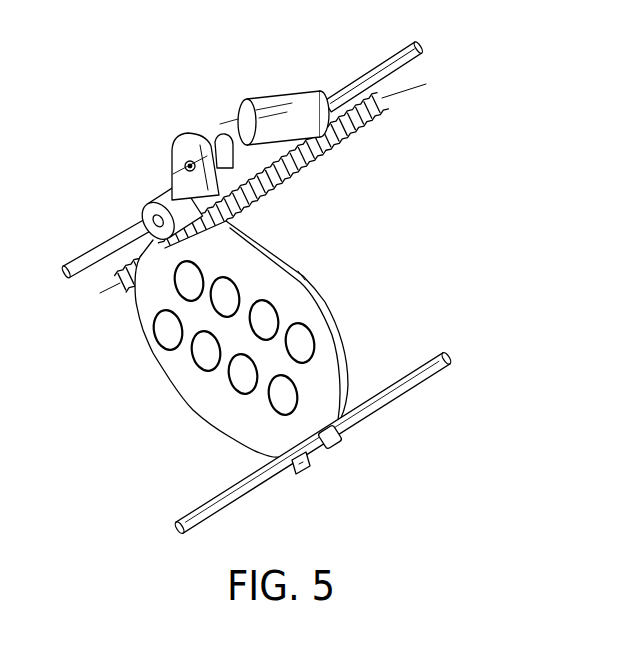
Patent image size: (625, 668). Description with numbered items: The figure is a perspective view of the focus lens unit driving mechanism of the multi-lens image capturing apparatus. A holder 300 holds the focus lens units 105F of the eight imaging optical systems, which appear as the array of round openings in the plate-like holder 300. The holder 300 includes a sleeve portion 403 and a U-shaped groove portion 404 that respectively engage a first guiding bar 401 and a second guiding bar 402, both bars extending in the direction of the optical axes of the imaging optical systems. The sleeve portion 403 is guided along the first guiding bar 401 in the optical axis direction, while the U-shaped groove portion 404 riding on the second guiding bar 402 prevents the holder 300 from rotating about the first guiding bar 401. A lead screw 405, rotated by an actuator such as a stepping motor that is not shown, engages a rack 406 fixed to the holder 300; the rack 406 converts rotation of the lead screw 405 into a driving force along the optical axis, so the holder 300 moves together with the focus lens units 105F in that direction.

The first guiding bar 401 is at (414, 46).
The second guiding bar 402 is at (438, 353).
The sleeve portion 403 is at (302, 97).
The U-shaped groove portion 404 is at (330, 447).
The lead screw 405 is at (378, 112).
The rack 406 is at (229, 140).
The holder 300 is at (324, 393).
The focus lens units 105F is at (286, 392).